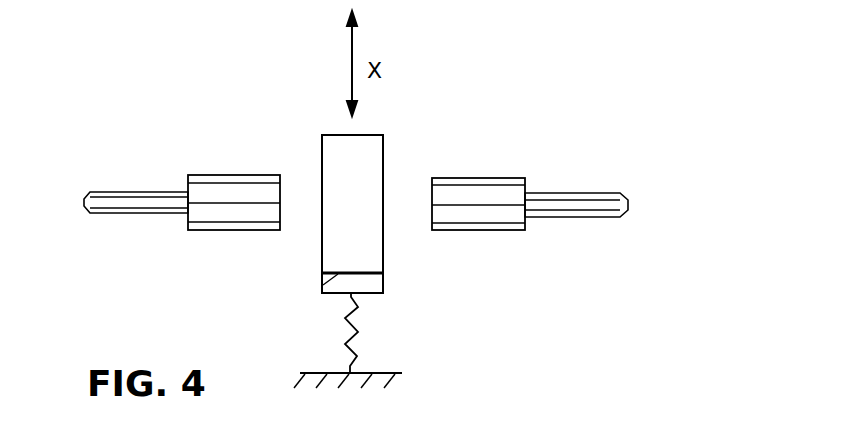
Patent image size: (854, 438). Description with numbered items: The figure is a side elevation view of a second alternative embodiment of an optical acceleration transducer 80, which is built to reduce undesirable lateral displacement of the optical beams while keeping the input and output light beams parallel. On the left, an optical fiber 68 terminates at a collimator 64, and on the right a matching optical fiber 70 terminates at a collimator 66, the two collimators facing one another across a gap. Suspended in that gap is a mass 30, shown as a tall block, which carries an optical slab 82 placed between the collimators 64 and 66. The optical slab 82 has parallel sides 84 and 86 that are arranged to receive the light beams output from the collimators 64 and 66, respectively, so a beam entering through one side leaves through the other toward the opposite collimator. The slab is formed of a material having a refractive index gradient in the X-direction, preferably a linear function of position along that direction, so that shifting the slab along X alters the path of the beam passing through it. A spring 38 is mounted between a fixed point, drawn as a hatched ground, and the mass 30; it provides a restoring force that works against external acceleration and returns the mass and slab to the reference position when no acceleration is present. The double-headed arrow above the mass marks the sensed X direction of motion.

The transducer 80 is at (176, 107).
The optical fiber 68 is at (124, 192).
The collimator 64 is at (234, 176).
The collimator 66 is at (482, 178).
The optical fiber 70 is at (567, 193).
The mass 30 is at (383, 283).
The optical slab 82 is at (323, 287).
The parallel side 84 is at (322, 243).
The parallel side 86 is at (383, 242).
The spring 38 is at (357, 340).